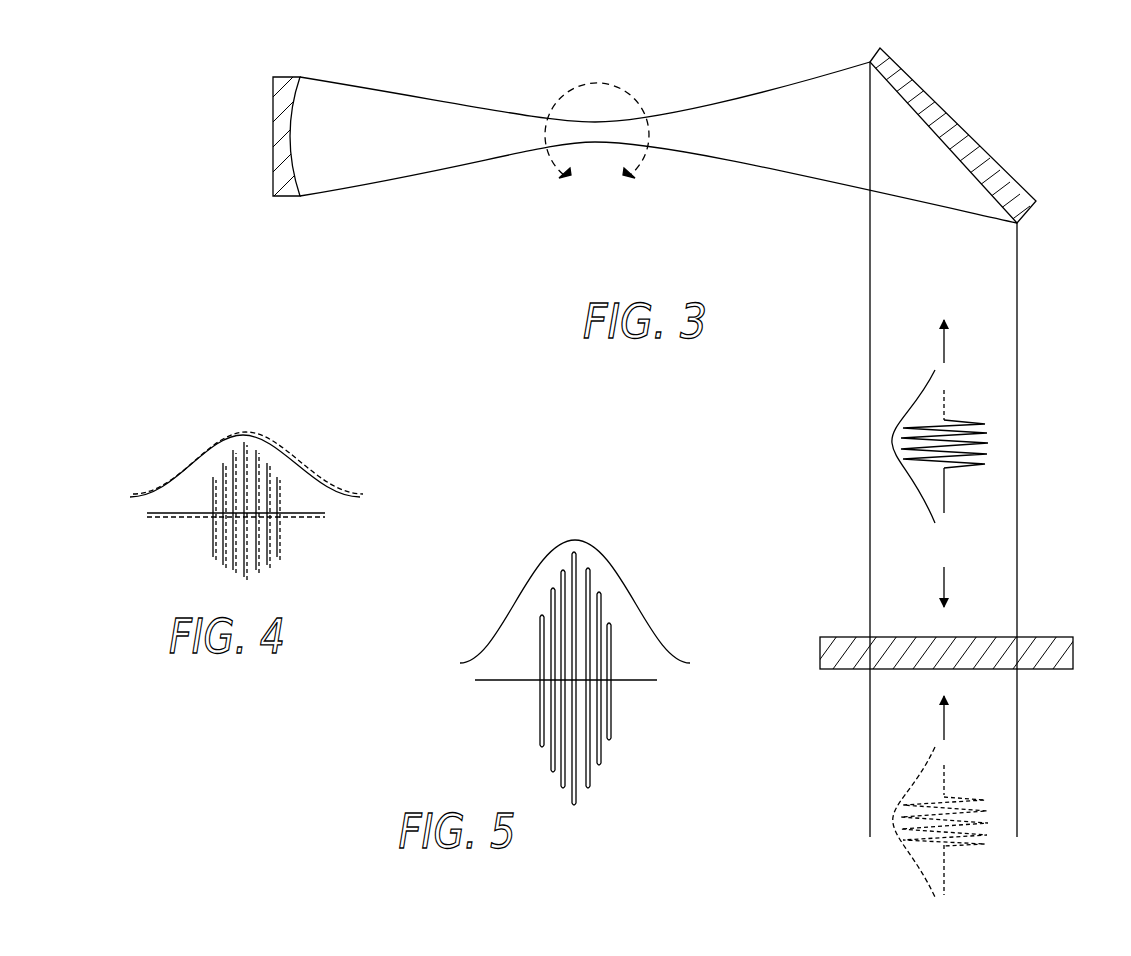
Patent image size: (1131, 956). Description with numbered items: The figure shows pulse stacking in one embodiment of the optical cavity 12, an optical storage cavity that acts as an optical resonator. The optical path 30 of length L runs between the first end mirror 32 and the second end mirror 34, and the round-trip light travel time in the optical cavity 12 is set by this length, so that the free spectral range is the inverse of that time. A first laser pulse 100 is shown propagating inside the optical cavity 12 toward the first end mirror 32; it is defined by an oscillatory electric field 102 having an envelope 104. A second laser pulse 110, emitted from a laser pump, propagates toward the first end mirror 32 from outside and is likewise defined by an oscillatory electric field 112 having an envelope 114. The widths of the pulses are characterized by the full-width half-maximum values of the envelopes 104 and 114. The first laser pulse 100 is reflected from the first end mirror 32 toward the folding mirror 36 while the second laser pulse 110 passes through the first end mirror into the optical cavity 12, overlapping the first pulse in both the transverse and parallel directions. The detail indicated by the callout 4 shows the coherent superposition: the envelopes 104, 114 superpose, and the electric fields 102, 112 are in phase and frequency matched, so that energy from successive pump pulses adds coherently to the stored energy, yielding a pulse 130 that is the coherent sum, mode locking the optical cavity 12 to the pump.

In FIG. 3, the optical cavity 12 is at (238, 62).
In FIG. 3, the second end mirror 34 is at (278, 170).
In FIG. 3, the FIG. 4 detail indicator 4 is at (597, 147).
In FIG. 3, the folding mirror 36 is at (968, 152).
In FIG. 3, the optical path 30 is at (1000, 342).
In FIG. 3, the first end mirror 32 is at (1045, 637).
In FIG. 3, the first laser pulse 100 is at (938, 433).
In FIG. 3, the oscillatory electric field 102 is at (960, 470).
In FIG. 4, the oscillatory electric field 102 is at (150, 515).
In FIG. 3, the envelope 104 is at (930, 480).
In FIG. 4, the envelope 104 is at (140, 497).
In FIG. 3, the second laser pulse 110 is at (924, 814).
In FIG. 3, the oscillatory electric field 112 is at (975, 840).
In FIG. 4, the oscillatory electric field 112 is at (303, 518).
In FIG. 3, the envelope 114 is at (903, 810).
In FIG. 4, the envelope 114 is at (152, 490).
In FIG. 5, the pulse 130 is at (512, 566).